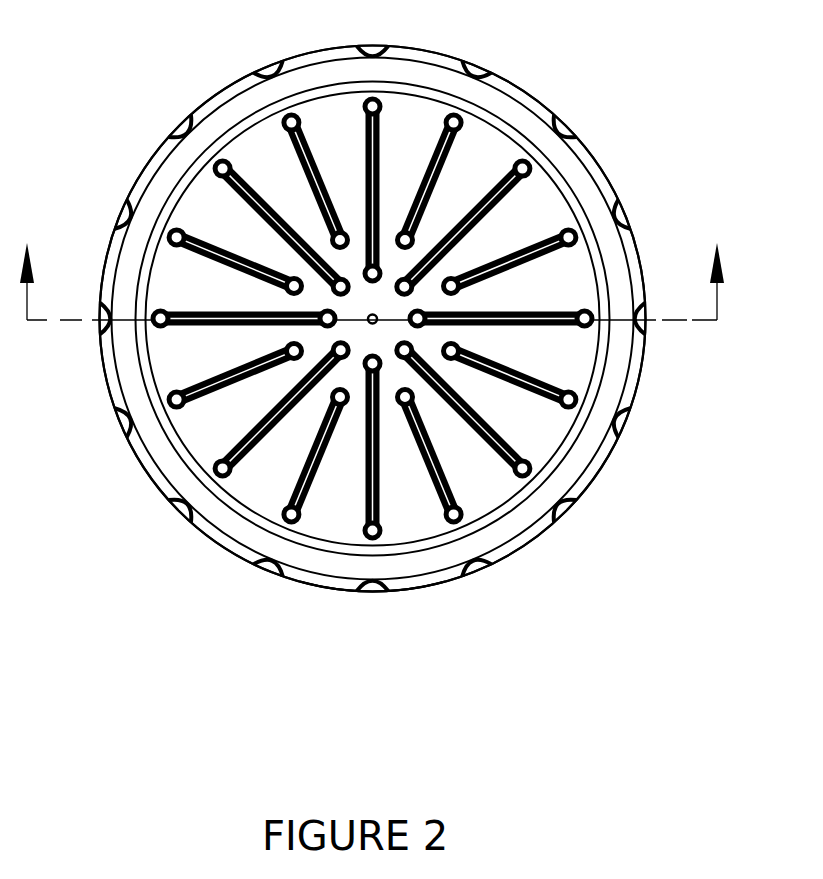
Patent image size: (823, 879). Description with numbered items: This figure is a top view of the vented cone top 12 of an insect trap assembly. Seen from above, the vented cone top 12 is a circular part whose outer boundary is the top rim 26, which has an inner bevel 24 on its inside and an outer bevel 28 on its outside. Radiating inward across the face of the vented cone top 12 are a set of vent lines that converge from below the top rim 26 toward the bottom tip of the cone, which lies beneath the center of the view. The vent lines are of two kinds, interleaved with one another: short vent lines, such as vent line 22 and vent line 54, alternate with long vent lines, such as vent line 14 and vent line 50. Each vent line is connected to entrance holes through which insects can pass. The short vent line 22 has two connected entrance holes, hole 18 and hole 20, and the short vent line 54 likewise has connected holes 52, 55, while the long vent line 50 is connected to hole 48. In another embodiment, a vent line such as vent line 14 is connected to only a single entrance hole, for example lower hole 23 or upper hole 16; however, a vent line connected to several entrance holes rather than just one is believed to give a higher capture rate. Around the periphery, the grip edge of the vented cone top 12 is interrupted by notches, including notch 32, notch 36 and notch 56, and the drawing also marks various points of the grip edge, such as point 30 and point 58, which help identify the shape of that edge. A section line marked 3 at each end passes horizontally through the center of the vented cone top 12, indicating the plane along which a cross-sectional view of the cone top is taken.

The section line 3- 3 is at (373, 266).
The vented cone top 12 is at (132, 120).
The vent line 14 is at (265, 218).
The upper hole 16 is at (218, 177).
The hole 18 is at (330, 240).
The hole 20 is at (283, 130).
The vent line 22 is at (318, 180).
The lower hole 23 is at (373, 280).
The inner bevel 24 is at (457, 92).
The top rim 26 is at (523, 112).
The outer bevel 28 is at (597, 172).
The point of the grip edge 30 is at (637, 407).
The notch 32 is at (567, 512).
The notch 36 is at (122, 423).
The hole 48 is at (385, 532).
The vent line 50 is at (370, 443).
The hole 52 is at (438, 515).
The vent line 54 is at (437, 458).
The hole 55 is at (410, 393).
The notch 56 is at (375, 597).
The point of the grip edge 58 is at (404, 593).